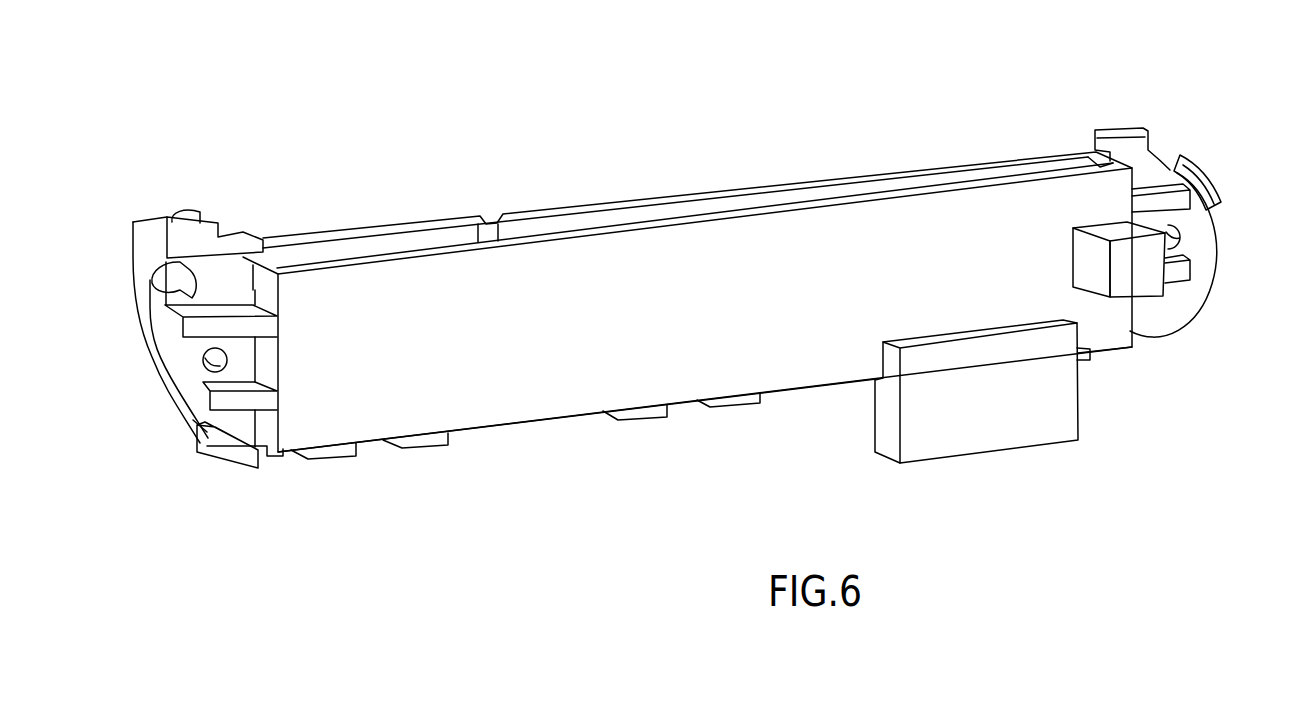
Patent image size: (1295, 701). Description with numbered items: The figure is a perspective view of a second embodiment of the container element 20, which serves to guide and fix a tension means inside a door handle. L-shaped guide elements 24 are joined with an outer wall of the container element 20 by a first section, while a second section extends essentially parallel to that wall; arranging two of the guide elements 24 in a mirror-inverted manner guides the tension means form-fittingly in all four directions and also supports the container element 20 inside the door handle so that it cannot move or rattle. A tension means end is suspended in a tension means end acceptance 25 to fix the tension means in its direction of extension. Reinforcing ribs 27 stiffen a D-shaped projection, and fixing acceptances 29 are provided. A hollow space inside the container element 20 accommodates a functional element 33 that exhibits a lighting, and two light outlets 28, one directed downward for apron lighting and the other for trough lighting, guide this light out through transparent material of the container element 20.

The container element 20 is at (578, 284).
The L-shaped guide elements 24 is at (1128, 123).
The tension means end acceptance 25 is at (192, 266).
The reinforcing ribs 27 is at (205, 327).
The light outlets 28 is at (1134, 263).
The fixing acceptances 29 is at (205, 358).
The functional element 33 is at (663, 214).